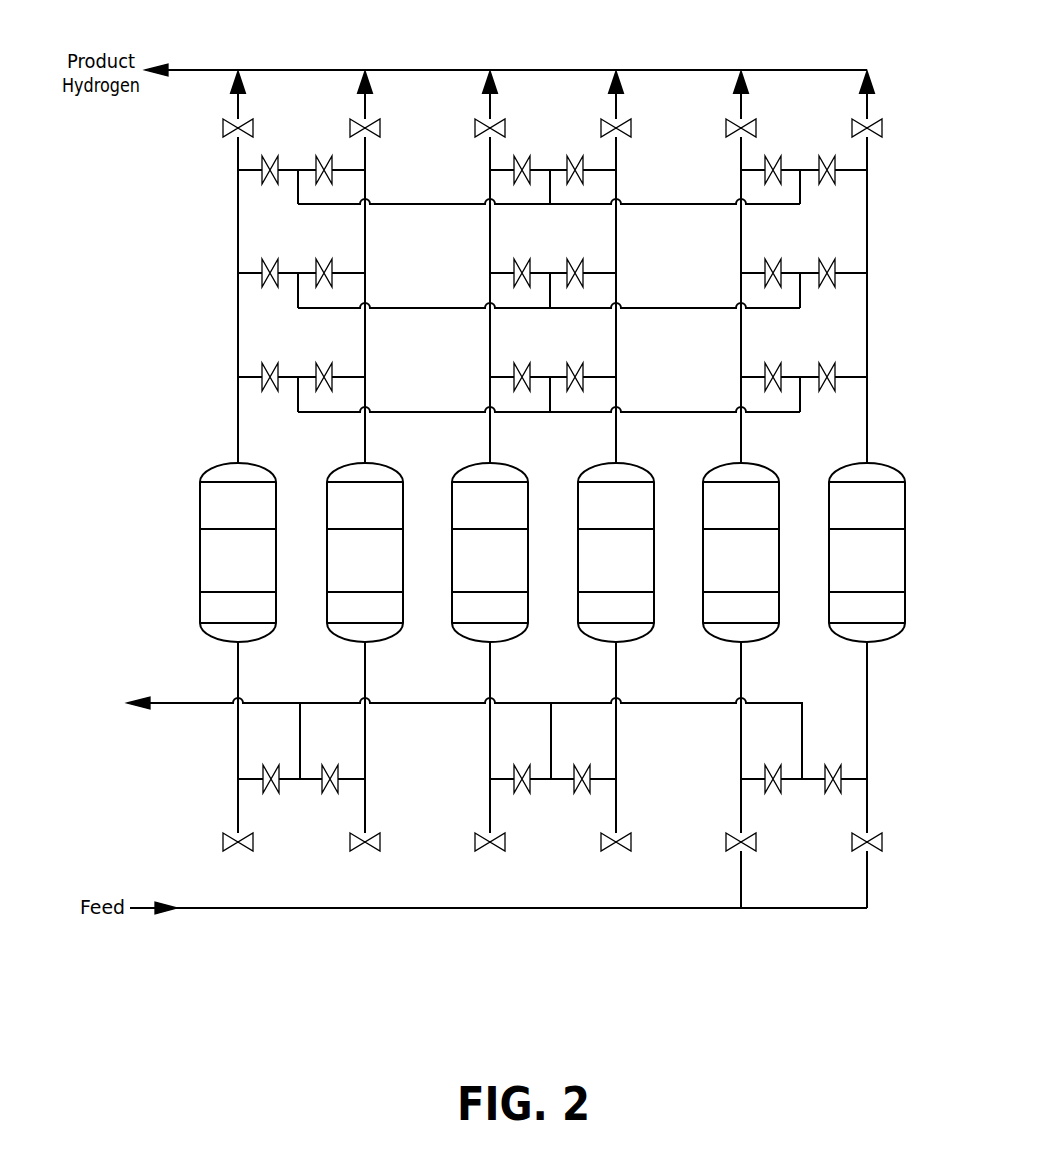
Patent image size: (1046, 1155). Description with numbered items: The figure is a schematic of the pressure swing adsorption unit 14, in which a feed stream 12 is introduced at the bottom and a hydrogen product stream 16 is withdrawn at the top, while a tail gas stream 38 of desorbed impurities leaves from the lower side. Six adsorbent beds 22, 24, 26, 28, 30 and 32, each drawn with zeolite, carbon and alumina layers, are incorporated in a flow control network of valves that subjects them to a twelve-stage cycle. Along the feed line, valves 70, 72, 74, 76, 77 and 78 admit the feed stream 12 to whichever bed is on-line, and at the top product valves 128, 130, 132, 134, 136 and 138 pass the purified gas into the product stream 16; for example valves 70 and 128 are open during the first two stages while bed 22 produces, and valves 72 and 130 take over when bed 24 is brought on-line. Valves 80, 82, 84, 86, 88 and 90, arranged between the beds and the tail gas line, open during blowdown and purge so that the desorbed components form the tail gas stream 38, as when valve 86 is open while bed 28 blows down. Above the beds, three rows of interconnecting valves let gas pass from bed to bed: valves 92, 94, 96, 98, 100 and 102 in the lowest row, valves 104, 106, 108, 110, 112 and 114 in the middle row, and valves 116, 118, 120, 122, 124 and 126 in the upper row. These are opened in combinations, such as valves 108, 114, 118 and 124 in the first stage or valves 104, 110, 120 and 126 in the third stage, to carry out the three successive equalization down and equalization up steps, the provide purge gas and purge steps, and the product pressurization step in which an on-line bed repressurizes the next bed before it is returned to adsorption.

The feed stream 12 is at (196, 910).
The adsorption unit 14 is at (705, 931).
The hydrogen product stream 16 is at (195, 69).
The adsorbent bed 22 is at (200, 556).
The adsorbent bed 24 is at (327, 556).
The adsorbent bed 26 is at (452, 556).
The adsorbent bed 28 is at (578, 556).
The adsorbent bed 30 is at (703, 556).
The adsorbent bed 32 is at (829, 556).
The tail gas stream 38 is at (180, 706).
The valve 70 is at (227, 850).
The valve 72 is at (373, 850).
The valve 74 is at (498, 850).
The valve 76 is at (624, 850).
The valve 77 is at (749, 850).
The valve 78 is at (875, 850).
The valve 80 is at (271, 764).
The valve 82 is at (330, 764).
The valve 84 is at (522, 764).
The valve 86 is at (582, 764).
The valve 88 is at (773, 764).
The valve 90 is at (833, 764).
The valve 92 is at (270, 362).
The valve 94 is at (324, 362).
The valve 96 is at (522, 362).
The valve 98 is at (575, 362).
The valve 100 is at (773, 362).
The valve 102 is at (827, 362).
The valve 104 is at (270, 258).
The valve 106 is at (324, 258).
The valve 108 is at (522, 258).
The valve 110 is at (575, 258).
The valve 112 is at (773, 258).
The valve 114 is at (827, 258).
The valve 116 is at (270, 155).
The valve 118 is at (324, 155).
The valve 120 is at (522, 155).
The valve 122 is at (575, 155).
The valve 124 is at (773, 155).
The valve 126 is at (827, 155).
The valve 128 is at (224, 125).
The valve 130 is at (379, 125).
The valve 132 is at (477, 128).
The valve 134 is at (630, 129).
The valve 136 is at (727, 125).
The valve 138 is at (882, 125).